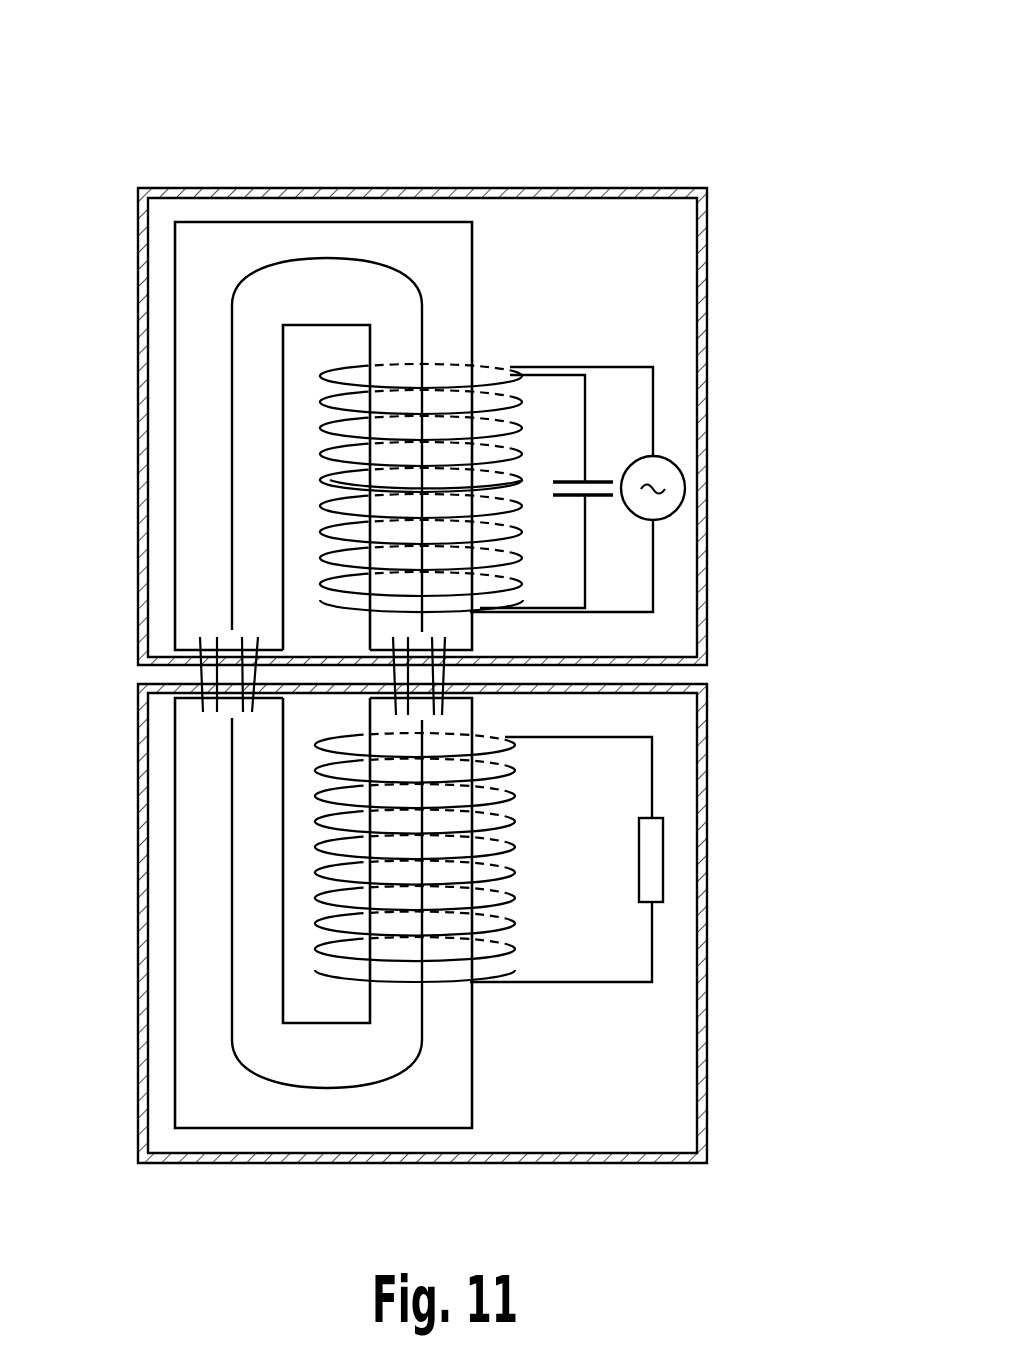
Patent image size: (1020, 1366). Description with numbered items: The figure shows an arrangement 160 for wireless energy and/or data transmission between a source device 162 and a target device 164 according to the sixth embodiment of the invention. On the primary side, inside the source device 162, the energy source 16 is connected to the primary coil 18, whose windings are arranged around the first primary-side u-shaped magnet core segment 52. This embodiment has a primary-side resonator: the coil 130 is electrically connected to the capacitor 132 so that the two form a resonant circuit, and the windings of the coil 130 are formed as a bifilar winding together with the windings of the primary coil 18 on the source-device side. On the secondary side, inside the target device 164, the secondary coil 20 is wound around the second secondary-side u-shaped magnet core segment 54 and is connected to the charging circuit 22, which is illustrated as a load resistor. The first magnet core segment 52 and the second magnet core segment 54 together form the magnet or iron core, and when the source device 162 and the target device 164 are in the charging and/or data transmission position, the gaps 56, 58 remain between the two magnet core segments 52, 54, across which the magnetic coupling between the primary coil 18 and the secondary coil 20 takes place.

The arrangement 160 is at (612, 76).
The source device 162 is at (707, 298).
The target device 164 is at (707, 727).
The first primary-side u-shaped magnet core segment 52 is at (447, 262).
The second secondary-side u-shaped magnet core segment 54 is at (360, 910).
The primary coil 18 is at (523, 470).
The coil 130 is at (518, 540).
The secondary coil 20 is at (512, 847).
The energy source 16 is at (672, 490).
The capacitor 132 is at (588, 477).
The charging circuit 22 is at (650, 862).
The gap 56 is at (168, 673).
The gap 58 is at (478, 672).